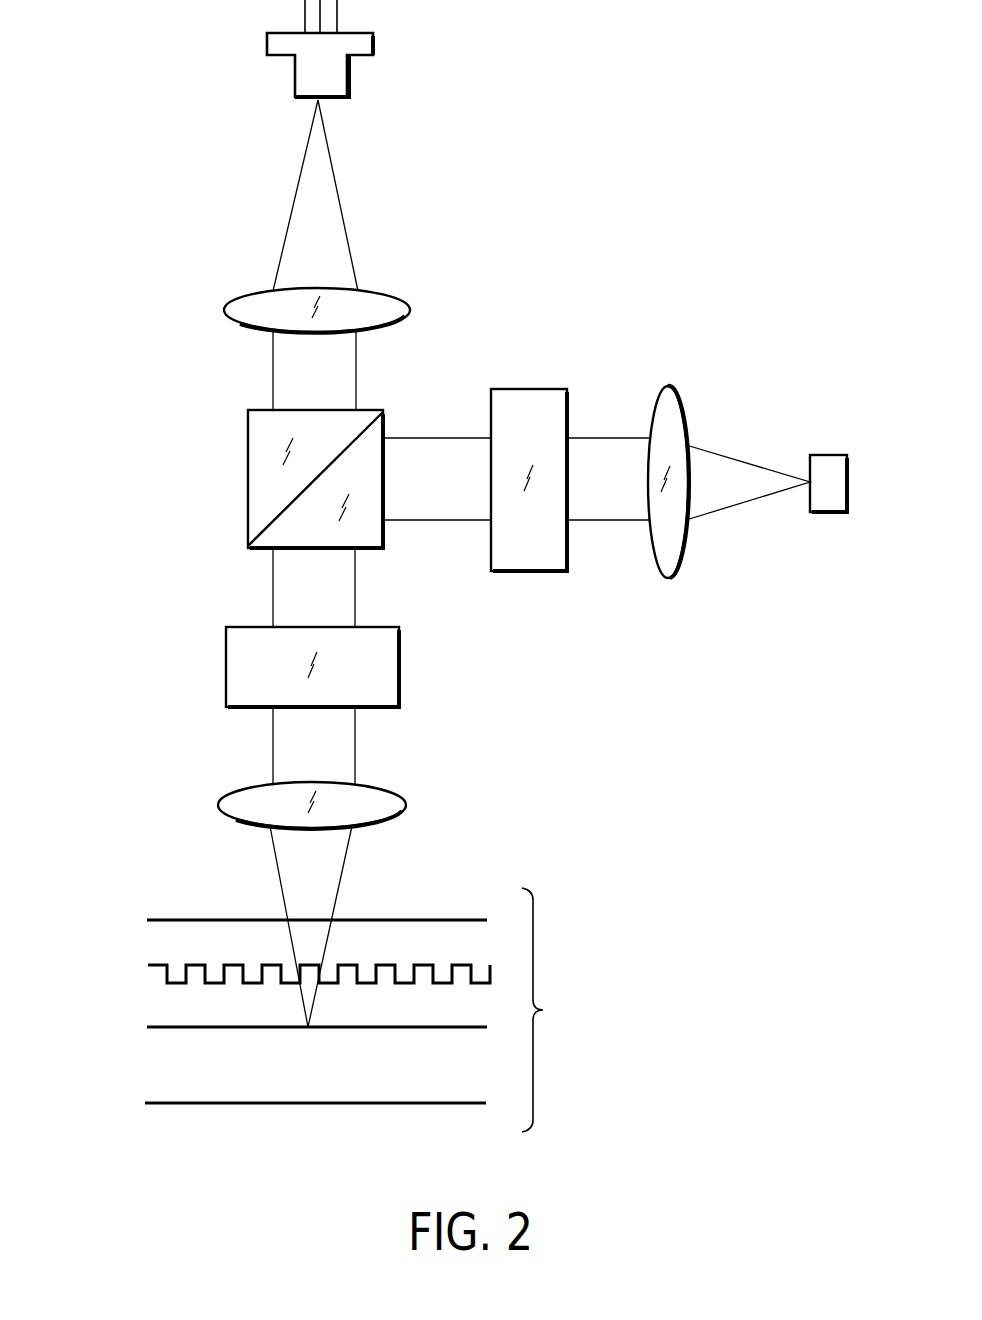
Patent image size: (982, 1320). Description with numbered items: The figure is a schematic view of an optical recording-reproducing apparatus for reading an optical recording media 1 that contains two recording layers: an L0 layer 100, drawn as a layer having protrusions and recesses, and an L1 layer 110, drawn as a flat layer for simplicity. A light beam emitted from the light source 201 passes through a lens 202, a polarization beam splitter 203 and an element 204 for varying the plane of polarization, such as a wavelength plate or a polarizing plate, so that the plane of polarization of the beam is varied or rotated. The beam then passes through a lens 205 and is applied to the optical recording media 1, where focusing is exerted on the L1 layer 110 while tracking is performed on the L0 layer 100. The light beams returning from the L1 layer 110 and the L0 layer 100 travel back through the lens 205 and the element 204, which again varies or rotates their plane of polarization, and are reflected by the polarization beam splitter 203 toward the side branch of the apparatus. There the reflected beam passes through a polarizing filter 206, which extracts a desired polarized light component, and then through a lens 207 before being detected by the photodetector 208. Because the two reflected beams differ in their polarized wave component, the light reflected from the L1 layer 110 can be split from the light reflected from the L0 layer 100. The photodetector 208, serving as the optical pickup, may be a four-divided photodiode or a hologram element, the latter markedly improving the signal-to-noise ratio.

The light source 201 is at (347, 82).
The lens 202 is at (410, 310).
The polarization beam splitter 203 is at (256, 446).
The element for varying the plane of polarization 204 is at (388, 670).
The lens 205 is at (396, 803).
The polarizing filter 206 is at (530, 400).
The lens 207 is at (668, 392).
The photodetector 208 is at (829, 460).
The L0 layer 100 is at (148, 965).
The L1 layer 110 is at (148, 1027).
The optical recording media 1 is at (356, 1010).